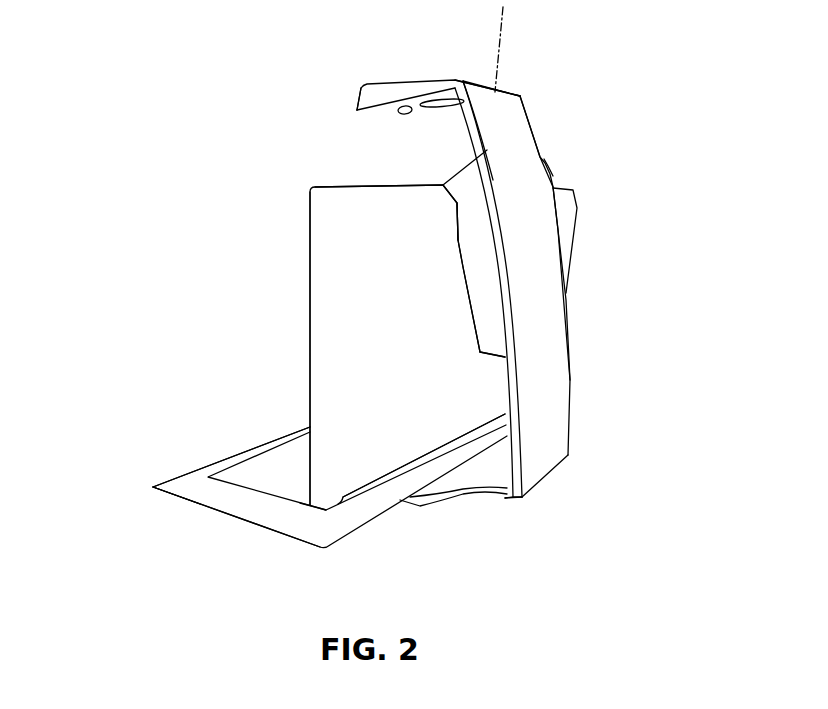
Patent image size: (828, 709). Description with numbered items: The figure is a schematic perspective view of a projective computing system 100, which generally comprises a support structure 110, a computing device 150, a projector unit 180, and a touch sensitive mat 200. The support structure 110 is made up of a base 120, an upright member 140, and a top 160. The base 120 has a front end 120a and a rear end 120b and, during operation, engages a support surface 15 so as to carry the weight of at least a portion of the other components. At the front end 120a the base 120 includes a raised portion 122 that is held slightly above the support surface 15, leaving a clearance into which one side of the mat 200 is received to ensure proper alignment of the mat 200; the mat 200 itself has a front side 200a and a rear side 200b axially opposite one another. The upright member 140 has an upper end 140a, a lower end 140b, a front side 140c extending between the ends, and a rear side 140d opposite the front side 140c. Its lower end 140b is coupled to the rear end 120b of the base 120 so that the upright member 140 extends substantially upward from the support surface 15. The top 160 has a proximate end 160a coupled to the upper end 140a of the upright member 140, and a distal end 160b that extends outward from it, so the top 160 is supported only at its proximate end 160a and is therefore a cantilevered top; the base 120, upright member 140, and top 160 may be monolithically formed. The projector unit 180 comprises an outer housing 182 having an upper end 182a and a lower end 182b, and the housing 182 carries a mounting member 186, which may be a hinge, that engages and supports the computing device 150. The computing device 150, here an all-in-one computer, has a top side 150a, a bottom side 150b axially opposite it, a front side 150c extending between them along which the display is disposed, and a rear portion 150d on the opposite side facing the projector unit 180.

The projective computing system 100 is at (170, 202).
The support surface 15 is at (133, 540).
The support structure 110 is at (620, 193).
The base 120 is at (455, 508).
The front end of base 120a is at (445, 451).
The rear end of base 120b is at (510, 503).
The raised portion 122 is at (403, 499).
The upright member 140 is at (545, 400).
The upper end of upright member 140a is at (520, 95).
The lower end of upright member 140b is at (541, 481).
The front side of upright member 140c is at (465, 132).
The rear side of upright member 140d is at (548, 163).
The computing device 150 is at (308, 210).
The top side of computing device 150a is at (377, 186).
The bottom side of computing device 150b is at (307, 522).
The front side of computing device 150c is at (308, 318).
The rear portion of panel 150d is at (398, 284).
The top 160 is at (443, 70).
The proximate end of top 160a is at (520, 95).
The distal end of top 160b is at (352, 107).
The projector unit 180 is at (510, 279).
The outer housing 182 is at (497, 317).
The upper end of housing 182a is at (487, 150).
The lower end of housing 182b is at (490, 363).
The mounting member 186 is at (453, 212).
The touch sensitive mat 200 is at (190, 482).
The front side of mat 200a is at (227, 458).
The rear side of mat 200b is at (340, 540).